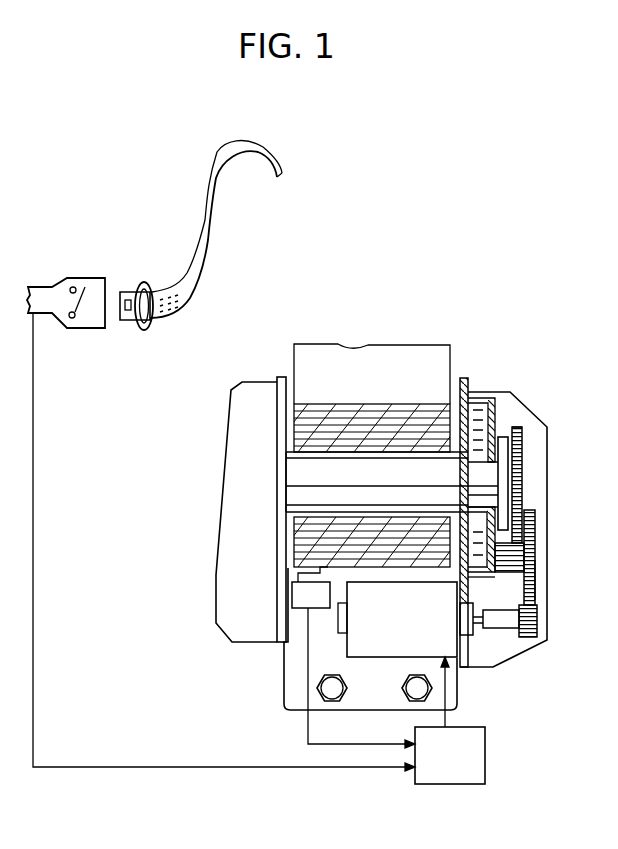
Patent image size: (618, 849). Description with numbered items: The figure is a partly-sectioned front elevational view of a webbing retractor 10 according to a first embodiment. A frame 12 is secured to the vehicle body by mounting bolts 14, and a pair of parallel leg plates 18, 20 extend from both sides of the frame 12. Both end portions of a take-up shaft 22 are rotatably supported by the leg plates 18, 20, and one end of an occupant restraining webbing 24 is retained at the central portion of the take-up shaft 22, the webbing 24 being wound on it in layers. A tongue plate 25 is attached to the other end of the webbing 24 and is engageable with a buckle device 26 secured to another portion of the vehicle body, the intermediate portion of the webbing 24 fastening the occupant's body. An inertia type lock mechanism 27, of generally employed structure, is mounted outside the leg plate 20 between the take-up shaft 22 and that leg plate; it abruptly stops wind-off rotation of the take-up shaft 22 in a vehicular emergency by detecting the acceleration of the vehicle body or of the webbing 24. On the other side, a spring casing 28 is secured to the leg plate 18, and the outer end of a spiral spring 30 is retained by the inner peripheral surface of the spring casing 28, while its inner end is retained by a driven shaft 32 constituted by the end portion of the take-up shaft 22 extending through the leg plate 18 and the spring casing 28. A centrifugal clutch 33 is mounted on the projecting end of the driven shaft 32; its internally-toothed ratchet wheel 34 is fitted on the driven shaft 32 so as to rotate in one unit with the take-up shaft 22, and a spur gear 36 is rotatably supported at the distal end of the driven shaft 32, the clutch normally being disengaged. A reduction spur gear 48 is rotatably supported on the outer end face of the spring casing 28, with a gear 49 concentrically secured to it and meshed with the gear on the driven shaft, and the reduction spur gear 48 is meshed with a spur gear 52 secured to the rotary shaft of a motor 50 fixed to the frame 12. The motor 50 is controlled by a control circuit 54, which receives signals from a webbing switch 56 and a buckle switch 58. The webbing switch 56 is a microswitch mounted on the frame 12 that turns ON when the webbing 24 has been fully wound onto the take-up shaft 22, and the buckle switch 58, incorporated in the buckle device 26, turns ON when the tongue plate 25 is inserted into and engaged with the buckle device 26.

The webbing retractor 10 is at (468, 313).
The frame 12 is at (284, 676).
The mounting bolts 14 is at (330, 690).
The leg plate 18 is at (463, 378).
The leg plate 20 is at (282, 376).
The take-up shaft 22 is at (290, 497).
The occupant restraining webbing 24 is at (276, 158).
The tongue plate 25 is at (145, 330).
The buckle device 26 is at (91, 278).
The inertia type lock mechanism 27 is at (232, 463).
The spring casing 28 is at (500, 413).
The spiral spring 30 is at (475, 420).
The driven shaft 32 is at (488, 485).
The centrifugal clutch 33 is at (526, 474).
The internally-toothed ratchet wheel 34 is at (514, 497).
The spur gear 36 is at (522, 437).
The reduction spur gear 48 is at (537, 579).
The gear 49 is at (512, 574).
The motor 50 is at (378, 646).
The spur gear 52 is at (527, 640).
The control circuit 54 is at (452, 785).
The webbing switch 56 is at (292, 597).
The buckle switch 58 is at (85, 307).